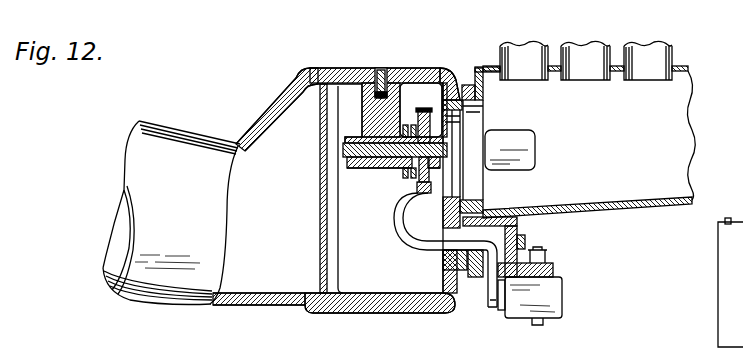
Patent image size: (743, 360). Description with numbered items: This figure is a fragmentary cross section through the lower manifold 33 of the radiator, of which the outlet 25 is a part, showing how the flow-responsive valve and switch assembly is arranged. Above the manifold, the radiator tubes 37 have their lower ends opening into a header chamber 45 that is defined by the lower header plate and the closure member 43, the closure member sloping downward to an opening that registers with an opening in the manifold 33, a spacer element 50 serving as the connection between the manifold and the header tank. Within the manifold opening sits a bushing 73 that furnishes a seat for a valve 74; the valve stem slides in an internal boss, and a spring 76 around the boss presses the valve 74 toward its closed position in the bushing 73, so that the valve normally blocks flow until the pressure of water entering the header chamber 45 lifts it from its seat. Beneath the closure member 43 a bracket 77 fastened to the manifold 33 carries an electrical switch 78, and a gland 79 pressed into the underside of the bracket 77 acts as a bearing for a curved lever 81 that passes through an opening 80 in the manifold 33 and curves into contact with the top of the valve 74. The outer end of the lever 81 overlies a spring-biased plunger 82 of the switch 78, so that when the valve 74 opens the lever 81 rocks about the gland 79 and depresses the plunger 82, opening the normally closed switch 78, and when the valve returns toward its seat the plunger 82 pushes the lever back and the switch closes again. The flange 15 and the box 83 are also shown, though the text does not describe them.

The outlet 25 is at (192, 135).
The lower manifold 33 is at (355, 75).
The flange plate 15 is at (372, 165).
The valve 74 is at (422, 108).
The spring 76 is at (410, 170).
The bushing 73 is at (450, 100).
The spacer element 50 is at (465, 87).
The tubes 37 is at (640, 43).
The closure member 43 is at (688, 68).
The header chamber 45 is at (677, 152).
The control box 83 is at (727, 218).
The bracket 77 is at (517, 222).
The electrical switch 78 is at (552, 282).
The gland 79 is at (482, 276).
The opening 80 is at (450, 255).
The curved lever 81 is at (400, 230).
The plunger 82 is at (498, 307).